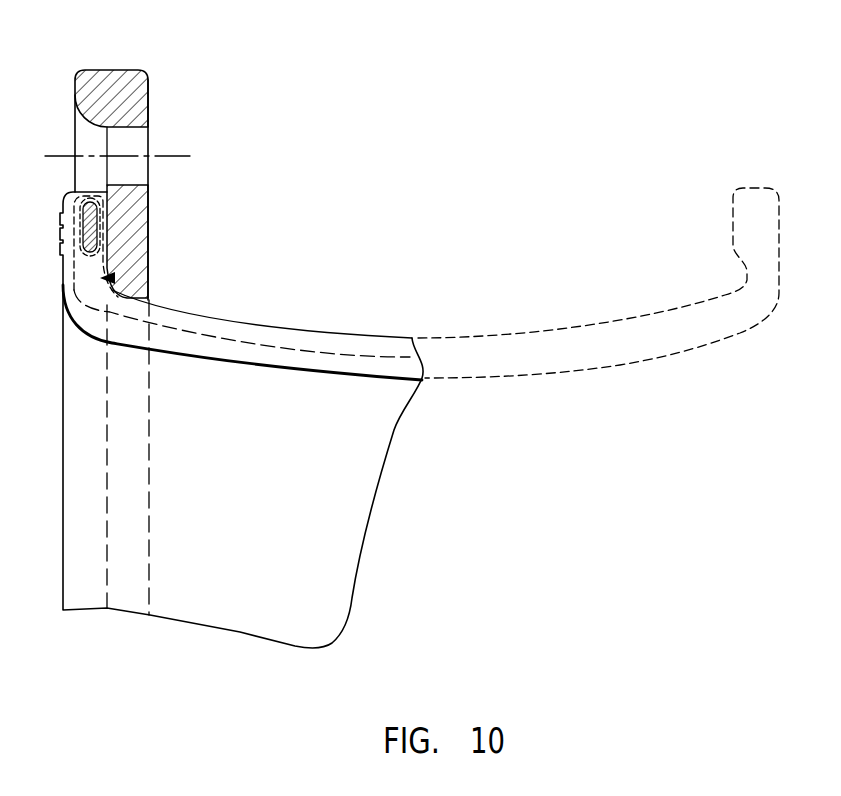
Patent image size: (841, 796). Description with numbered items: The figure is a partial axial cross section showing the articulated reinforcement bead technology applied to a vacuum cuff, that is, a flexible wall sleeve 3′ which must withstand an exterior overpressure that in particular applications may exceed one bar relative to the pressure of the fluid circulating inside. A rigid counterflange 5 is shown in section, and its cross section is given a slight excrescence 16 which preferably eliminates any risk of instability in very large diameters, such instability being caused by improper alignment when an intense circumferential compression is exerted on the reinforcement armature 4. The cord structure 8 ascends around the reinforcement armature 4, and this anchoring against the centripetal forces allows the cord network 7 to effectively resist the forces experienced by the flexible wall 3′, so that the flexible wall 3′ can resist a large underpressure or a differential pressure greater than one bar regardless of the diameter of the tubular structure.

The flexible wall sleeve 3′ is at (322, 347).
The reinforcement armature 4 is at (86, 212).
The rigid counterflange 5 is at (139, 70).
The cord network 7 is at (247, 345).
The cord structure 8 is at (110, 212).
The slight excrescence 16 is at (110, 279).